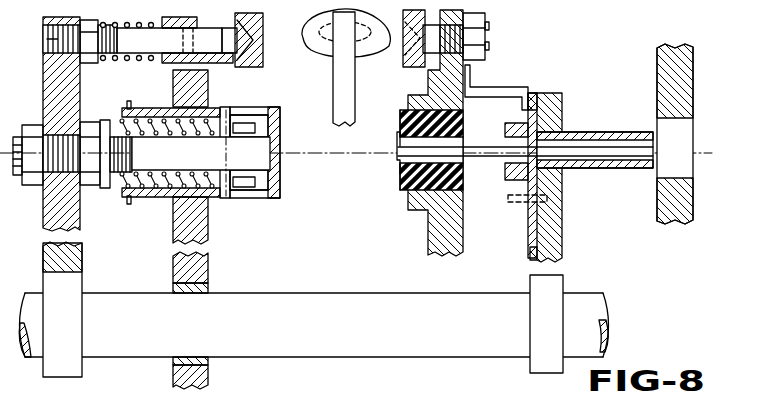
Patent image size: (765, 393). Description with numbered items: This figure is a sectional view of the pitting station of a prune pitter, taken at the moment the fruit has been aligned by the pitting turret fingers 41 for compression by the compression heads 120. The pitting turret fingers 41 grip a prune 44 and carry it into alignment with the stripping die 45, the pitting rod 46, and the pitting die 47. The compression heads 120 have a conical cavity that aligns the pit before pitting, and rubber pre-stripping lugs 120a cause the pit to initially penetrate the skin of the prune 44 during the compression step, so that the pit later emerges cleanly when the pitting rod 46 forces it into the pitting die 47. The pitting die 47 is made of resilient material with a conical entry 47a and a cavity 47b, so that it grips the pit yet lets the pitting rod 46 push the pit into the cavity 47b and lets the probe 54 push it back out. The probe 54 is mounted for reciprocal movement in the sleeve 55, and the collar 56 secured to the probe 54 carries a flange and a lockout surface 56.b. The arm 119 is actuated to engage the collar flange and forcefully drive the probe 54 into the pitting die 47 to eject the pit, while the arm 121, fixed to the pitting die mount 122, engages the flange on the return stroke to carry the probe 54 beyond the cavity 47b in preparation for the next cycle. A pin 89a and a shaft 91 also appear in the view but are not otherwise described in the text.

The pitting turret fingers 41 is at (333, 105).
The prune 44 is at (337, 42).
The stripping die 45 is at (277, 192).
The pitting rod 46 is at (250, 160).
The pitting die 47 is at (410, 172).
The conical entry 47a is at (403, 142).
The cavity 47b is at (462, 142).
The probe 54 is at (400, 157).
The sleeve 55 is at (623, 136).
The collar 56 is at (542, 107).
The lockout surface 56.b is at (533, 93).
The pin 89a is at (520, 200).
The main shaft 91 is at (157, 365).
The arm 119 is at (557, 237).
The compression heads 120 is at (237, 68).
The rubber pre-stripping lugs 120a is at (412, 60).
The arm 121 is at (498, 88).
The pitting die mount 122 is at (428, 242).